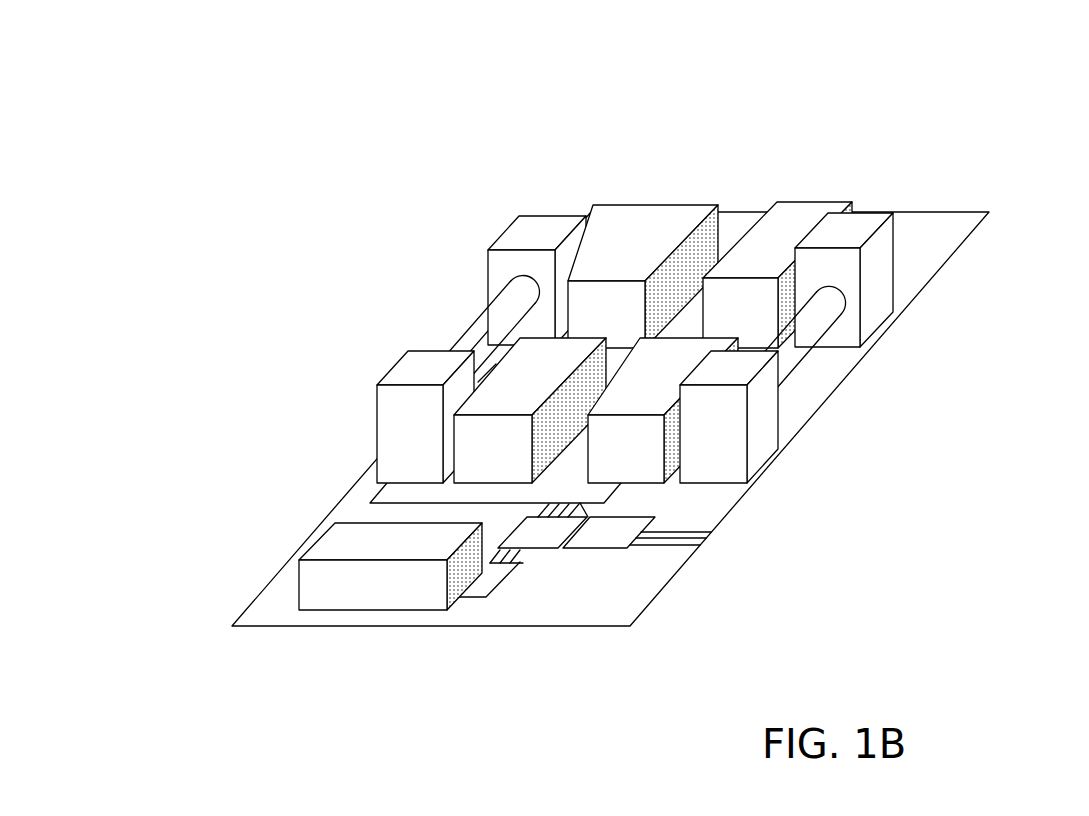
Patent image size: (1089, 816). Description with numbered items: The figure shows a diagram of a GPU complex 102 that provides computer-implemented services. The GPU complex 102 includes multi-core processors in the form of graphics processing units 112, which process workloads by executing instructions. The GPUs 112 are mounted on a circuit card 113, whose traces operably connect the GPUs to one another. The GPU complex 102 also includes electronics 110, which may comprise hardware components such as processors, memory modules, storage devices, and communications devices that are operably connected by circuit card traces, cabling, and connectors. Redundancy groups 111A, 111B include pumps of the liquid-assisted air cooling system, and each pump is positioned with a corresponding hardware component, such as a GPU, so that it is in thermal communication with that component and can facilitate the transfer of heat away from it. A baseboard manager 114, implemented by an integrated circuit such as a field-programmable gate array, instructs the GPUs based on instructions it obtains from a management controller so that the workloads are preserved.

The GPU complex 102 is at (569, 368).
The electronics 110 is at (542, 537).
The redundancy group 111A is at (655, 260).
The redundancy group 111B is at (757, 428).
The graphics processing units 112 is at (533, 378).
The circuit card 113 is at (563, 563).
The baseboard manager 114 is at (325, 587).